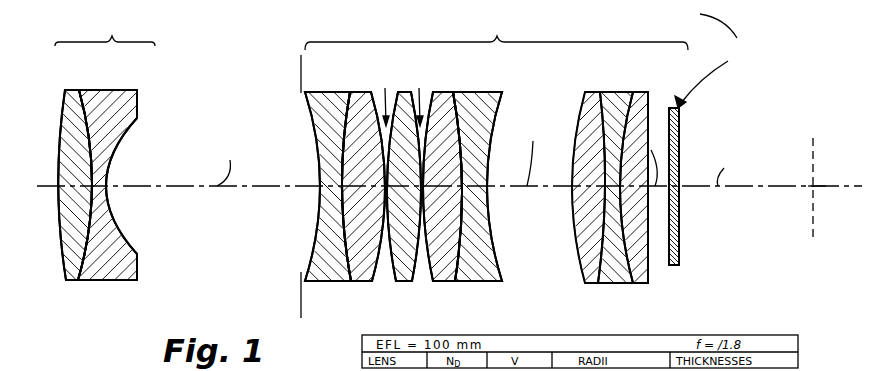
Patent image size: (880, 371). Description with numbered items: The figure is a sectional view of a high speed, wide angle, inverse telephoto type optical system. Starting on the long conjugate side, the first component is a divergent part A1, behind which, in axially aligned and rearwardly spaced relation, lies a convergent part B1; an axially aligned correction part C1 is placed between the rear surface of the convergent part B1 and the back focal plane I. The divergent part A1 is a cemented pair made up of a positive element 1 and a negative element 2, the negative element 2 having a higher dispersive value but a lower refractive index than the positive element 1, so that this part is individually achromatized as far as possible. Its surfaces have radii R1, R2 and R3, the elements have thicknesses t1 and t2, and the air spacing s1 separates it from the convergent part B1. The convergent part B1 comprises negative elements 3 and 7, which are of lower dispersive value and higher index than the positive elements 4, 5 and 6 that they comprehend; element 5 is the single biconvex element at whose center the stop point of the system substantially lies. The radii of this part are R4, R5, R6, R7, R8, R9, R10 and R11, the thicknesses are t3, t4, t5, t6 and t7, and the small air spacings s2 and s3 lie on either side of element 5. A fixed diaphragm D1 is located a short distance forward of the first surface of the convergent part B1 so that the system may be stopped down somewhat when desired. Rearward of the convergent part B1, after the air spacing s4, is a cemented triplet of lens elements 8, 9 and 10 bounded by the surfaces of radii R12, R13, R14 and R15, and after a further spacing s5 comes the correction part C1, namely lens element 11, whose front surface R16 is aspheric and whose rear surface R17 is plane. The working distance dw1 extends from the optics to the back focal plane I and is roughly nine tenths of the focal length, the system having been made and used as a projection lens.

The divergent part A1 is at (105, 30).
The convergent part B1 is at (496, 32).
The correction part C1 is at (712, 61).
The fixed diaphragm D1 is at (300, 73).
The positive element 1 is at (70, 92).
The negative element 2 is at (115, 92).
The negative element 3 is at (328, 96).
The positive element 4 is at (362, 96).
The positive element 5 is at (404, 94).
The positive element 6 is at (443, 96).
The negative element 7 is at (477, 96).
The lens element 8 is at (590, 93).
The lens element 9 is at (621, 100).
The lens element 10 is at (655, 100).
The lens element 11 is at (680, 115).
The thickness t1 is at (68, 186).
The thickness t2 is at (100, 186).
The thickness t3 is at (333, 186).
The thickness t4 is at (398, 186).
The thickness t5 is at (398, 192).
The thickness t6 is at (448, 190).
The thickness t7 is at (470, 186).
The axial spacing s1 is at (217, 165).
The axial spacing s2 is at (382, 98).
The axial spacing s3 is at (419, 98).
The axial spacing s4 is at (534, 153).
The axial spacing s5 is at (655, 160).
The radius of curvature R1 is at (66, 281).
The radius of curvature R2 is at (78, 280).
The radius of curvature R3 is at (137, 259).
The radius of curvature R4 is at (300, 284).
The radius of curvature R5 is at (350, 282).
The radius of curvature R6 is at (372, 282).
The radius of curvature R7 is at (397, 282).
The radius of curvature R8 is at (412, 282).
The radius of curvature R9 is at (434, 282).
The radius of curvature R10 is at (458, 282).
The radius of curvature R11 is at (503, 282).
The radius of curvature R12 is at (584, 284).
The radius of curvature R13 is at (598, 284).
The radius of curvature R14 is at (634, 284).
The radius of curvature R15 is at (649, 284).
The aspheric surface R16 is at (665, 270).
The plane surface R17 is at (681, 262).
The working distance dw1 is at (736, 170).
The back focal plane I is at (812, 238).